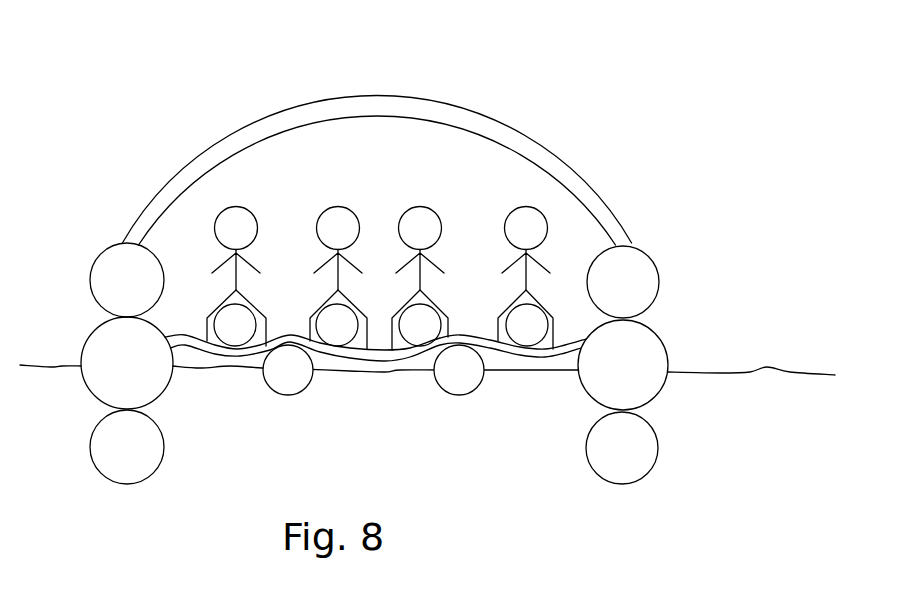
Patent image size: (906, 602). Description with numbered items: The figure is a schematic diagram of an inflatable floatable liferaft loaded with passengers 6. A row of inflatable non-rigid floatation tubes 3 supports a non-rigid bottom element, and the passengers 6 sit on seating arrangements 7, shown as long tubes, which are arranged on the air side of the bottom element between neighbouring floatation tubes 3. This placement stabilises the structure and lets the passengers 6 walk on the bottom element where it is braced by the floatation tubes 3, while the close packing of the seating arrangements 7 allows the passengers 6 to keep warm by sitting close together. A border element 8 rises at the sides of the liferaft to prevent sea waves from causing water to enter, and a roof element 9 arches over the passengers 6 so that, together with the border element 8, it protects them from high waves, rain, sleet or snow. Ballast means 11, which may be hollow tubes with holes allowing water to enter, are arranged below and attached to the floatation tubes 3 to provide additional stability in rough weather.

The non-rigid floatation tube 3 is at (638, 363).
The passenger 6 is at (347, 237).
The seating arrangement 7 is at (528, 322).
The border element 8 is at (620, 282).
The roof element 9 is at (573, 160).
The ballast means 11 is at (632, 462).